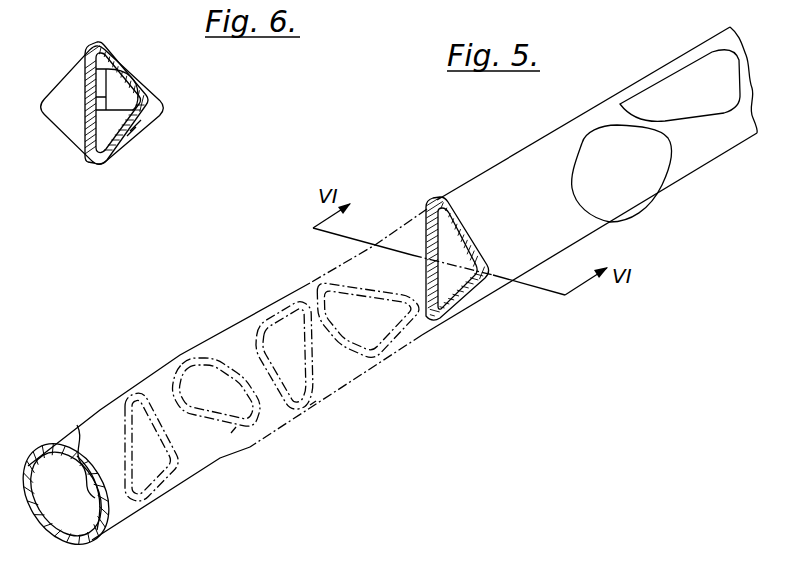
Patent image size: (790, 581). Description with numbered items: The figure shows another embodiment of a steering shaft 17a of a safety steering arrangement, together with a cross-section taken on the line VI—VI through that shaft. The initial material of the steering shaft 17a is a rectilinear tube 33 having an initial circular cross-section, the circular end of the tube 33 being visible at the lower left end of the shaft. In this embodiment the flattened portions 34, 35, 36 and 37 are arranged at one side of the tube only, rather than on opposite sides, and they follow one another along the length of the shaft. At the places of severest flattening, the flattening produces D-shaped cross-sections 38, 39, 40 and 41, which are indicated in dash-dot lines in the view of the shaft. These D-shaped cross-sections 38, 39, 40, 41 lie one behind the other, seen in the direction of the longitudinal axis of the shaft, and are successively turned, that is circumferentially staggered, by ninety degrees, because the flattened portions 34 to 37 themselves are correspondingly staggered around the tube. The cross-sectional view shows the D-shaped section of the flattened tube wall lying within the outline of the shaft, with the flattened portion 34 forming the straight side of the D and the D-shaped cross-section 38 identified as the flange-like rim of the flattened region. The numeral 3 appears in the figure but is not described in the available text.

In FIG. 5, the frame member 3 is at (587, 238).
In FIG. 6, the steering shaft 17a is at (150, 56).
In FIG. 5, the steering shaft 17a is at (533, 150).
In FIG. 5, the rectilinear tube 33 is at (90, 538).
In FIG. 6, the flattened portion 34 is at (86, 131).
In FIG. 5, the flattened portion 34 is at (426, 234).
In FIG. 5, the flattened portion 35 is at (233, 430).
In FIG. 5, the flattened portion 36 is at (313, 403).
In FIG. 5, the flattened portion 37 is at (357, 281).
In FIG. 6, the D-shaped cross-section 38 is at (138, 78).
In FIG. 5, the D-shaped cross-section 38 is at (452, 197).
In FIG. 5, the D-shaped cross-section 39 is at (194, 357).
In FIG. 5, the D-shaped cross-section 40 is at (278, 308).
In FIG. 5, the D-shaped cross-section 41 is at (421, 328).